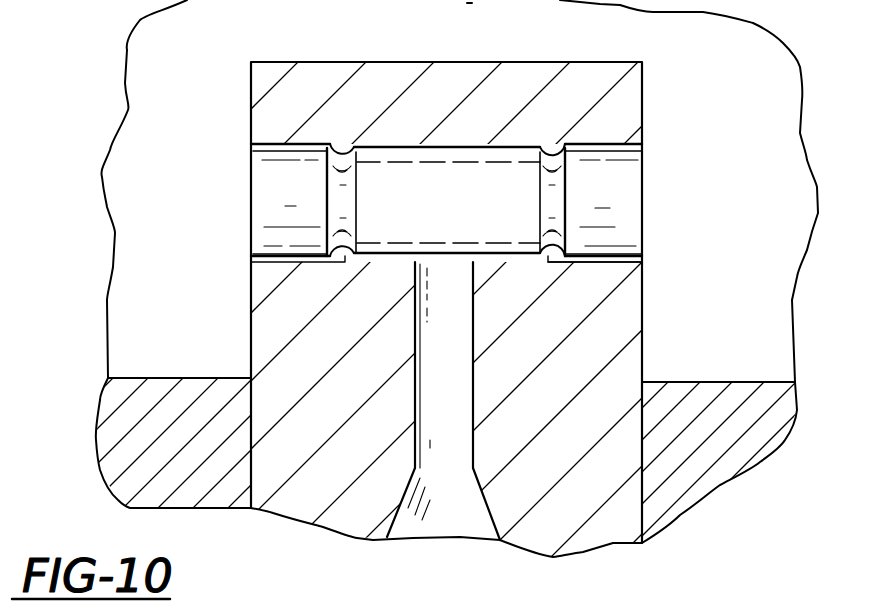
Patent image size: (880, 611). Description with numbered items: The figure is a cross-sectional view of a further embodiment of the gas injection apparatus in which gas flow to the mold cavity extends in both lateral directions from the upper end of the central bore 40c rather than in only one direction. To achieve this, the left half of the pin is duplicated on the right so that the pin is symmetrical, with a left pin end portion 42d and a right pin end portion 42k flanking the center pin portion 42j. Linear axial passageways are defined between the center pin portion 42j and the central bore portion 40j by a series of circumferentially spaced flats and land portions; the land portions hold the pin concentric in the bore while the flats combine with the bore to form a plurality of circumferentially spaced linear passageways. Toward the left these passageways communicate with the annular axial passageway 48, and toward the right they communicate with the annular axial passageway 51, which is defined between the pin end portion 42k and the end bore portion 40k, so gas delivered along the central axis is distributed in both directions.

The annular axial passageway 48 is at (227, 145).
The annular axial passageway 51 is at (669, 141).
The pin end portion 42d is at (253, 187).
The pin end portion 42k is at (627, 213).
The central bore portion 40j is at (440, 148).
The center pin portion 42j is at (420, 215).
The central bore 40c is at (455, 398).
The end bore portion 40k is at (600, 263).